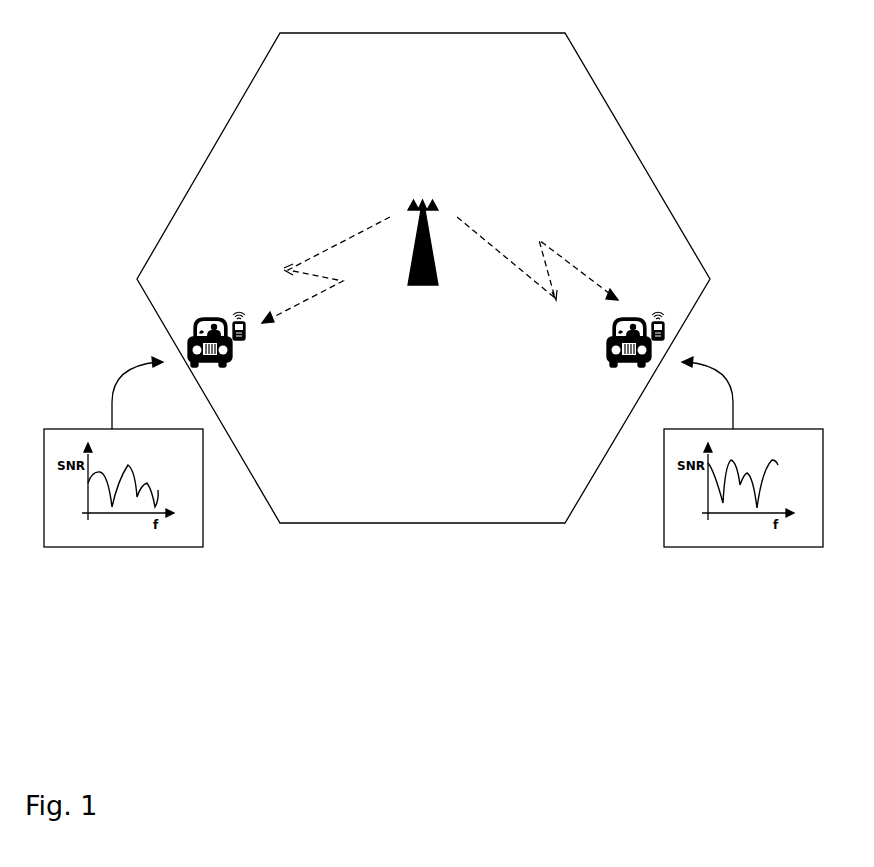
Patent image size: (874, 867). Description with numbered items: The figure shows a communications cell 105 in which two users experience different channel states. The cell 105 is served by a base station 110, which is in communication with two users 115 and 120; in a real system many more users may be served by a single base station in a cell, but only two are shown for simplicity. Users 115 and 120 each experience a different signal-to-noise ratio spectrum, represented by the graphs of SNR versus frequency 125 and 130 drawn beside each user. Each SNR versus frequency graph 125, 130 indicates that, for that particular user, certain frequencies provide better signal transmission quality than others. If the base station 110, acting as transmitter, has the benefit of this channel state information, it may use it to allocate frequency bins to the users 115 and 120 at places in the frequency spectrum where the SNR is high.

The communications cell 105 is at (585, 105).
The base station 110 is at (427, 293).
The user 115 is at (208, 313).
The user 120 is at (632, 317).
The graph of SNR versus frequency 125 is at (145, 550).
The graph of SNR versus frequency 130 is at (688, 550).